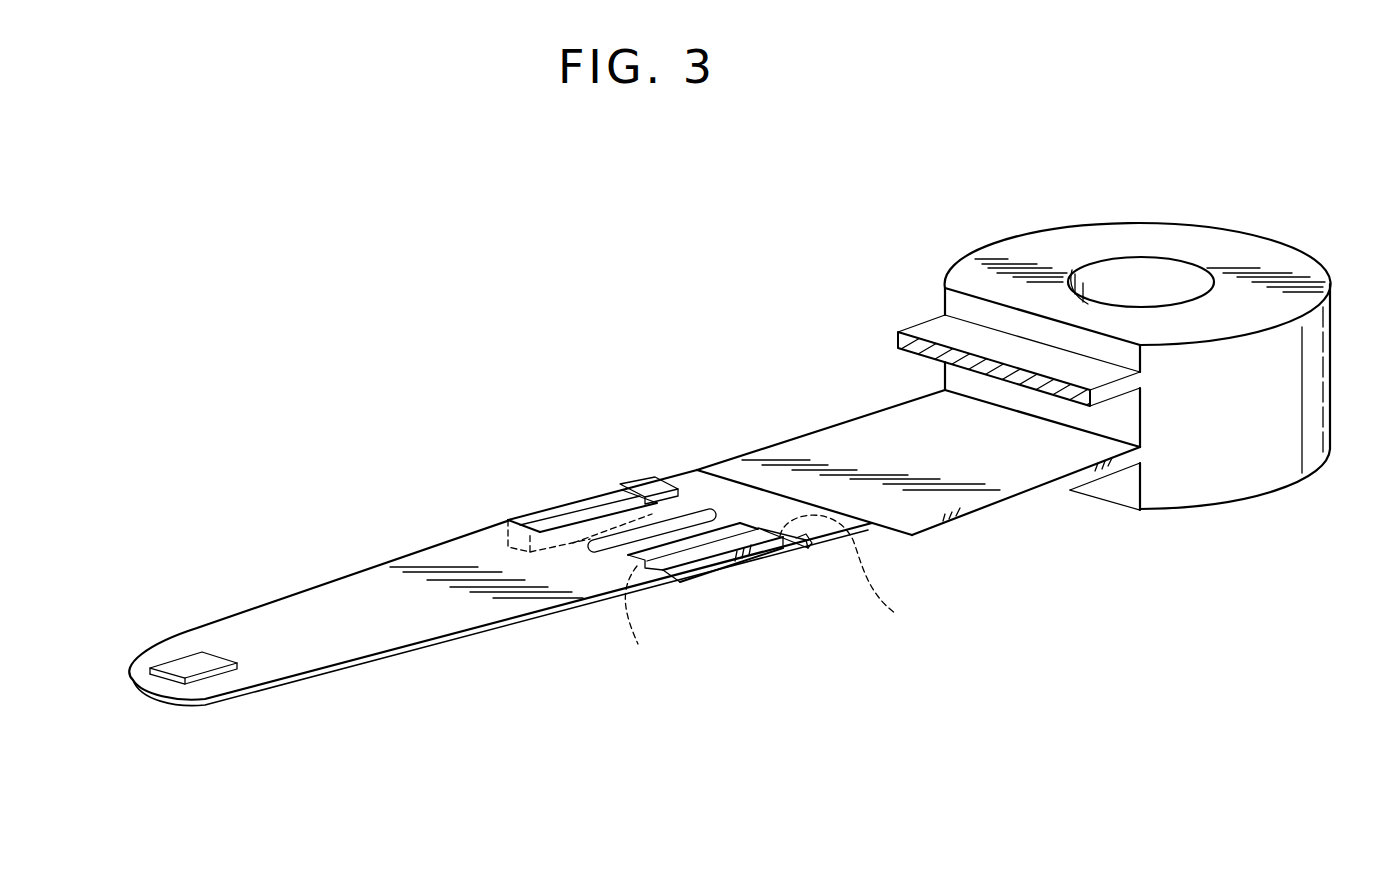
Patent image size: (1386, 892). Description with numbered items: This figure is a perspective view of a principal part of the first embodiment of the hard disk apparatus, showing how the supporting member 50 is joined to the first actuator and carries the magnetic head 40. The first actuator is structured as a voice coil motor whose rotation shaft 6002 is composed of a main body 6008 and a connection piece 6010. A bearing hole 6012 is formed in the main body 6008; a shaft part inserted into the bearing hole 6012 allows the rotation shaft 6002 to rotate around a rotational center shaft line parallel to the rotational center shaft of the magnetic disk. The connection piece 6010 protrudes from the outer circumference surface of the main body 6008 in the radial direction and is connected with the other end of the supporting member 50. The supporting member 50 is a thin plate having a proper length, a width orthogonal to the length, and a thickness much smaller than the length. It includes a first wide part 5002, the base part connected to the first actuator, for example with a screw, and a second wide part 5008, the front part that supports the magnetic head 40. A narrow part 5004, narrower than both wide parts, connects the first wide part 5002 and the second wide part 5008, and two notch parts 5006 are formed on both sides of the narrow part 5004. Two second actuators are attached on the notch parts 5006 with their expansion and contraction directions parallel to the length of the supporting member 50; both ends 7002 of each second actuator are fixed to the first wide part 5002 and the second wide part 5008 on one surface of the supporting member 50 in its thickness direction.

The magnetic head 40 is at (190, 660).
The supporting member 50 is at (602, 568).
The first wide part 5002 is at (767, 503).
The narrow part 5004 is at (682, 538).
The notch part 5006 is at (783, 547).
The second wide part 5008 is at (425, 648).
The rotation shaft 6002 is at (1014, 318).
The main body 6008 is at (1030, 258).
The connection piece 6010 is at (838, 440).
The bearing hole 6012 is at (1178, 266).
The end of second actuator 7002 is at (786, 594).